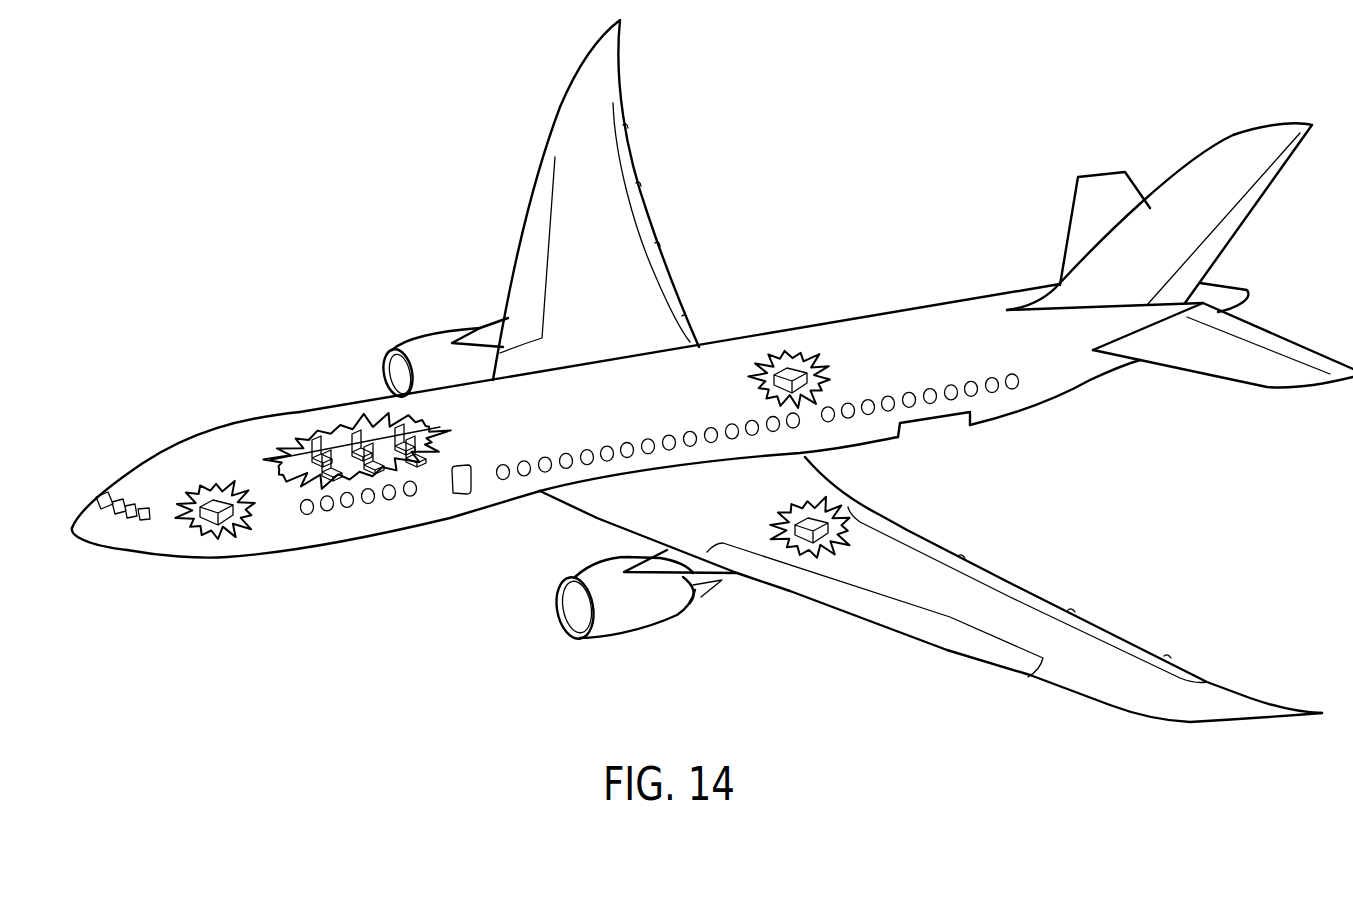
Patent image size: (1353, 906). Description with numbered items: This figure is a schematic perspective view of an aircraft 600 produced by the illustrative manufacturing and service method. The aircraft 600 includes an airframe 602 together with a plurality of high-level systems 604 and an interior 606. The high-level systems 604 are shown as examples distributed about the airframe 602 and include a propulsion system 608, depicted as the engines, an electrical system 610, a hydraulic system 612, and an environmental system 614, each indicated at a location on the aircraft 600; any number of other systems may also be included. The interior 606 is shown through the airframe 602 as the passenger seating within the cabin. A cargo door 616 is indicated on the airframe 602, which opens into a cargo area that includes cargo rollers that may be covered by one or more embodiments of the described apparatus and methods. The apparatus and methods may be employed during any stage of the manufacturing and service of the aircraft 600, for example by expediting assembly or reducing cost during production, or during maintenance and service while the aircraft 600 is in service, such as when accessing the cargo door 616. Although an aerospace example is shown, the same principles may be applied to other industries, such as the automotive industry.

The aircraft 600 is at (224, 155).
The airframe 602 is at (339, 370).
The high-level systems 604 is at (913, 268).
The interior 606 is at (310, 435).
The propulsion system 608 is at (427, 343).
The electrical system 610 is at (216, 482).
The hydraulic system 612 is at (813, 520).
The environmental system 614 is at (790, 370).
The cargo door 616 is at (933, 440).